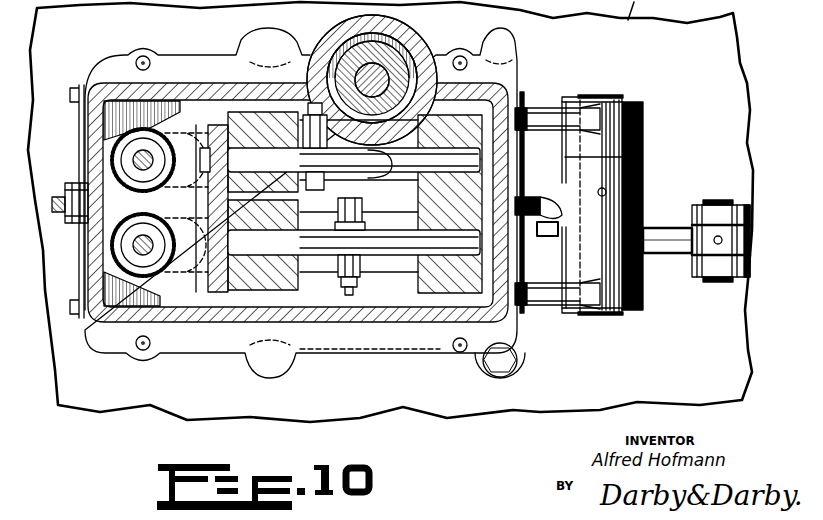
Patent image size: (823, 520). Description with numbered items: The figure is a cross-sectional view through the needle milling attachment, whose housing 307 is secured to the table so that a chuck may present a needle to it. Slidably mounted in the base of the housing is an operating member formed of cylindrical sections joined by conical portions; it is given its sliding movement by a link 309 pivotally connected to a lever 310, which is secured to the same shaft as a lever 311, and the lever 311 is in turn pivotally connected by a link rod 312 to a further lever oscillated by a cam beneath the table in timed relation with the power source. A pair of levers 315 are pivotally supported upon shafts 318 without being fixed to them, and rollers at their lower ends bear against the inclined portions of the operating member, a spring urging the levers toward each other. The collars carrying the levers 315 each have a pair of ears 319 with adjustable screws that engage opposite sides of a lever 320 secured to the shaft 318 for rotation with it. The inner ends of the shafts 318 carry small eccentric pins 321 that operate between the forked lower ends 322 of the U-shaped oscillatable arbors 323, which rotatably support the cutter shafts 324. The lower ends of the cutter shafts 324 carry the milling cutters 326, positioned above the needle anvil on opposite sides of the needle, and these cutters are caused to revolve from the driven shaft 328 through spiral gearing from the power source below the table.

The housing 307 is at (527, 318).
The link 309 is at (521, 280).
The lever 310 is at (545, 180).
The lever 311 is at (660, 262).
The link rod 312 is at (696, 283).
The levers 315 is at (304, 278).
The shafts 318 is at (445, 247).
The ears 319 is at (360, 232).
The lever 320 is at (312, 239).
The eccentric pins 321 is at (178, 276).
The forked lower ends 322 is at (189, 274).
The oscillatable arbors 323 is at (205, 142).
The cutter shafts 324 is at (138, 246).
The milling cutters 326 is at (120, 260).
The shaft 328 is at (384, 64).